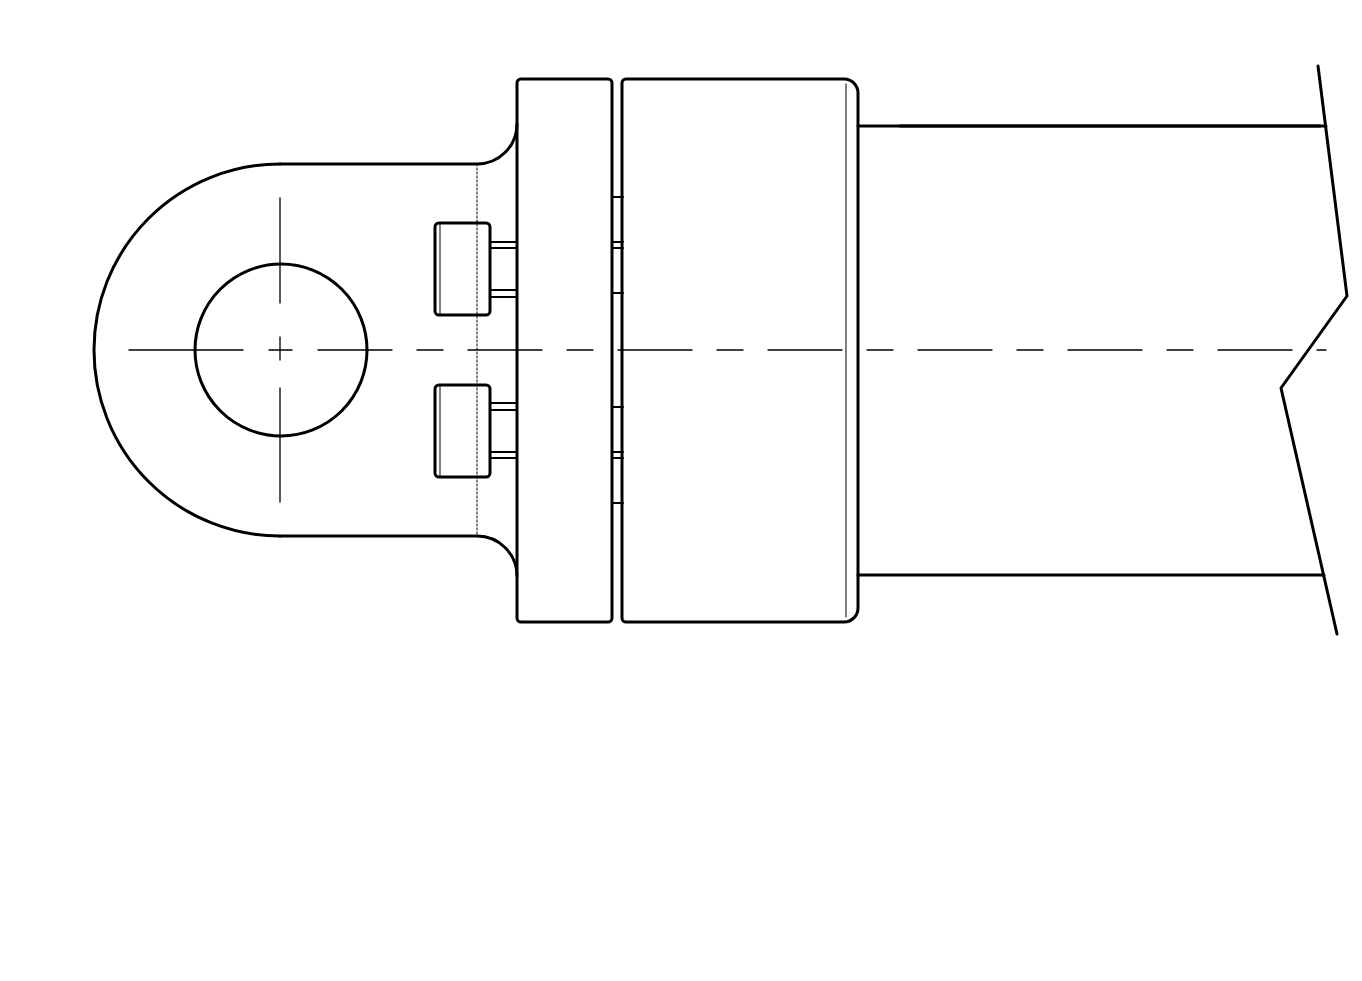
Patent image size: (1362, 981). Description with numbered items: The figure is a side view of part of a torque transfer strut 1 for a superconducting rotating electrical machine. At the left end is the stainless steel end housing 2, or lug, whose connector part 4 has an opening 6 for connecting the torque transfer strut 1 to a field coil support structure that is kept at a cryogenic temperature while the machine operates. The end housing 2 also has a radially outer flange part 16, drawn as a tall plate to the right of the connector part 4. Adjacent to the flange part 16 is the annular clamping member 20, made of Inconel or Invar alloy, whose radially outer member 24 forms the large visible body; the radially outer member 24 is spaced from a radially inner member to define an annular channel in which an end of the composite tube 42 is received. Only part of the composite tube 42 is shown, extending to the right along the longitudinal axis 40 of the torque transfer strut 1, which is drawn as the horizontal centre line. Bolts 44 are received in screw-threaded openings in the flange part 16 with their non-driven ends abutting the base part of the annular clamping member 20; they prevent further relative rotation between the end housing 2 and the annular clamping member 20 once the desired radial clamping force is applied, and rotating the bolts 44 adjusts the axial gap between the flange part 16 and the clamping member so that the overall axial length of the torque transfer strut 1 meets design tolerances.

The torque transfer strut 1 is at (298, 665).
The end housing 2 is at (492, 586).
The connector part 4 is at (223, 220).
The opening 6 is at (307, 318).
The radially outer flange part 16 is at (575, 570).
The annular clamping member 20 is at (722, 650).
The radially outer member 24 is at (802, 580).
The longitudinal axis 40 is at (1019, 351).
The composite tube 42 is at (1099, 466).
The bolts 44 is at (465, 245).